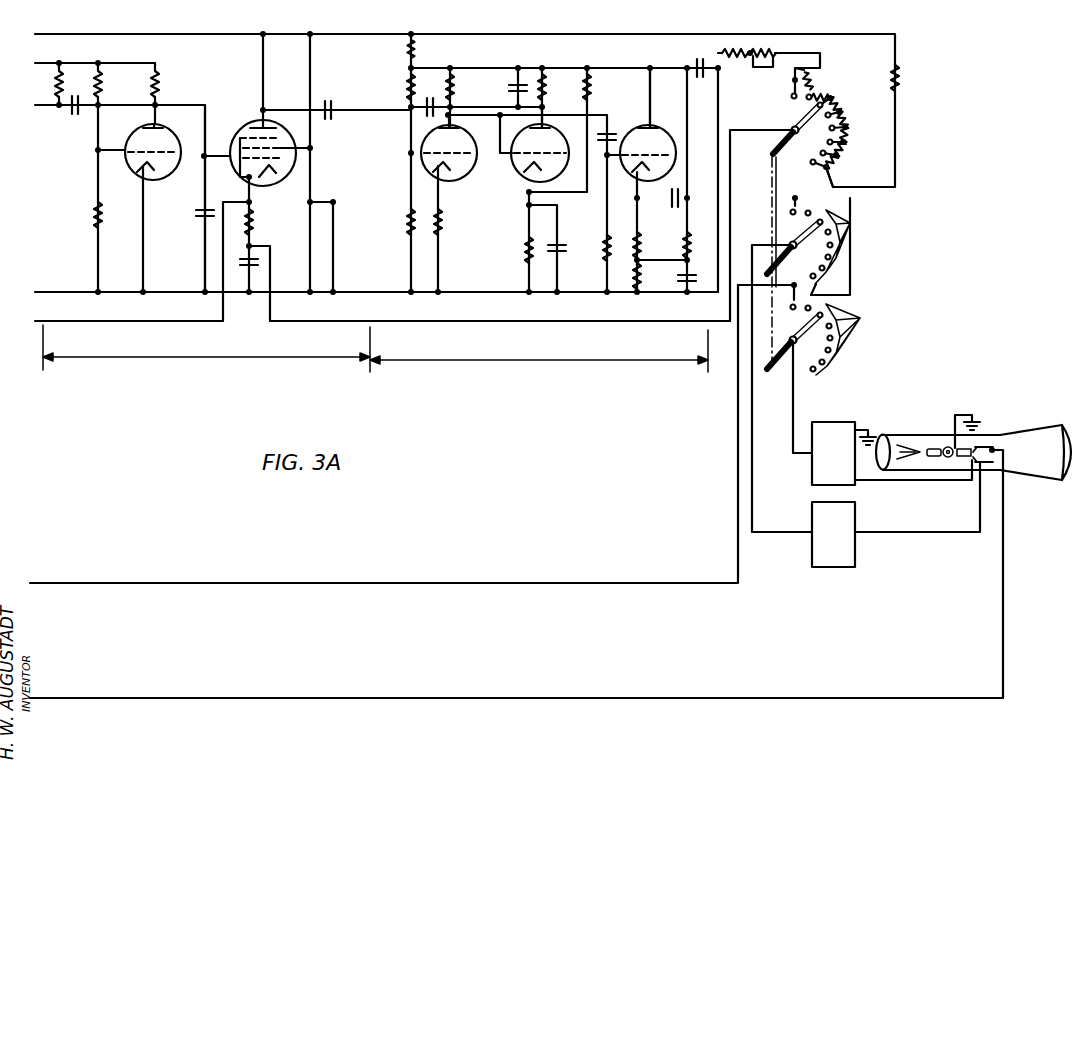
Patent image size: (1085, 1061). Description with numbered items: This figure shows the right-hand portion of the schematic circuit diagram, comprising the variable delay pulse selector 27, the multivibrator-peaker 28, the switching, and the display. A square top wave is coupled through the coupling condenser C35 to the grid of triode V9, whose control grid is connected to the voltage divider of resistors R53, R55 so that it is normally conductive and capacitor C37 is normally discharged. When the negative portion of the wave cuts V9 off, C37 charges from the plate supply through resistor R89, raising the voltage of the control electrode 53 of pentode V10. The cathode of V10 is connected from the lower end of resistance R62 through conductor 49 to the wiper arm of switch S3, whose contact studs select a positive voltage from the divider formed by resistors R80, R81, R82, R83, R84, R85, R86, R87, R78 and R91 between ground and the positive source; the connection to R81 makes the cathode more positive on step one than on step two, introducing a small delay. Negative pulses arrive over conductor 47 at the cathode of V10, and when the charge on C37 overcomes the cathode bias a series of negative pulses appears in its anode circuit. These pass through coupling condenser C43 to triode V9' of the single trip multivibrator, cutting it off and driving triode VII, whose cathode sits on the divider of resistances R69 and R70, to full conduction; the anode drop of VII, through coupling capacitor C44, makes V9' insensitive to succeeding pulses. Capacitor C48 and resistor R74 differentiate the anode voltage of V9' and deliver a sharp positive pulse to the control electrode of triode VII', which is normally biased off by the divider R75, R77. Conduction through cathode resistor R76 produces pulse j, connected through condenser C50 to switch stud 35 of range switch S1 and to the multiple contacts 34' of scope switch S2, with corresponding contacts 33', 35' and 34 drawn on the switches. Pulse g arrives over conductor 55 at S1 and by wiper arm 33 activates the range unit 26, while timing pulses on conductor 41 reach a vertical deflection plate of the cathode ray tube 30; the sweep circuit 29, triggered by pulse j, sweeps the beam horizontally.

The resistor R53 is at (120, 84).
The resistor R89 is at (176, 84).
The coupling condenser C35 is at (75, 114).
The triode V9 is at (139, 146).
The pentode V10 is at (235, 136).
The control electrode 53 is at (206, 160).
The coupling condenser C43 is at (330, 115).
The resistor R55 is at (92, 218).
The capacitor C37 is at (199, 216).
The resistance R62 is at (254, 222).
The conductor 47 is at (85, 320).
The conductor 49 is at (464, 321).
The variable delay pulse selector 27 is at (206, 348).
The multivibrator-peaker 28 is at (539, 351).
The coupling capacitor C44 is at (430, 92).
The resistance R70 is at (592, 92).
The capacitor C48 is at (616, 132).
The triode V9' is at (443, 156).
The triode VII is at (533, 152).
The triode VII' is at (649, 124).
The condenser C50 is at (677, 202).
The resistance R69 is at (524, 252).
The resistor R74 is at (602, 250).
The cathode resistor R76 is at (651, 243).
The resistance R75 is at (682, 254).
The resistance R77 is at (642, 289).
The resistor R78 is at (730, 46).
The resistor R91 is at (766, 46).
The resistor R81 is at (808, 60).
The resistor R80 is at (900, 78).
The resistor R82 is at (831, 96).
The resistor R83 is at (838, 106).
The resistor R84 is at (846, 120).
The resistor R85 is at (847, 137).
The resistor R86 is at (842, 150).
The resistor R87 is at (832, 166).
The switch S3 is at (798, 230).
The range switch S1 is at (820, 247).
The scope switch S2 is at (829, 345).
The switch stud 35 is at (787, 223).
The wiper arm 33 is at (816, 245).
The range network 34 is at (853, 247).
The switch contact 35' is at (787, 317).
The switch contacts 33' is at (815, 339).
The multiple contacts 34' is at (854, 339).
The sweep circuit 29 is at (825, 422).
The cathode ray tube 30 is at (1025, 434).
The range unit 26 is at (830, 567).
The conductor 55 is at (286, 583).
The conductor 41 is at (144, 698).